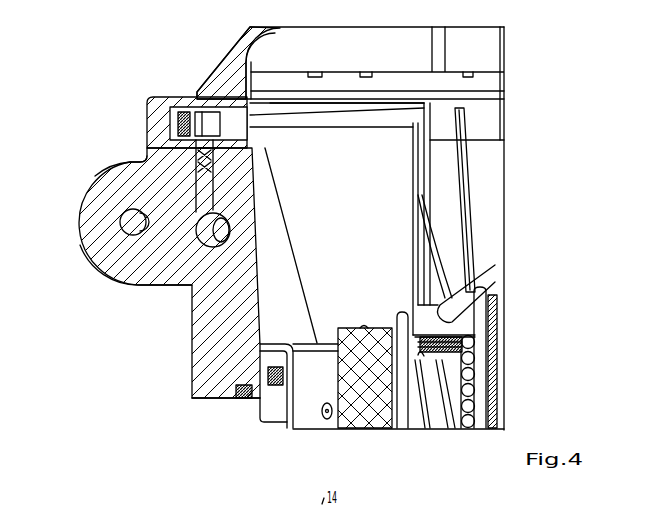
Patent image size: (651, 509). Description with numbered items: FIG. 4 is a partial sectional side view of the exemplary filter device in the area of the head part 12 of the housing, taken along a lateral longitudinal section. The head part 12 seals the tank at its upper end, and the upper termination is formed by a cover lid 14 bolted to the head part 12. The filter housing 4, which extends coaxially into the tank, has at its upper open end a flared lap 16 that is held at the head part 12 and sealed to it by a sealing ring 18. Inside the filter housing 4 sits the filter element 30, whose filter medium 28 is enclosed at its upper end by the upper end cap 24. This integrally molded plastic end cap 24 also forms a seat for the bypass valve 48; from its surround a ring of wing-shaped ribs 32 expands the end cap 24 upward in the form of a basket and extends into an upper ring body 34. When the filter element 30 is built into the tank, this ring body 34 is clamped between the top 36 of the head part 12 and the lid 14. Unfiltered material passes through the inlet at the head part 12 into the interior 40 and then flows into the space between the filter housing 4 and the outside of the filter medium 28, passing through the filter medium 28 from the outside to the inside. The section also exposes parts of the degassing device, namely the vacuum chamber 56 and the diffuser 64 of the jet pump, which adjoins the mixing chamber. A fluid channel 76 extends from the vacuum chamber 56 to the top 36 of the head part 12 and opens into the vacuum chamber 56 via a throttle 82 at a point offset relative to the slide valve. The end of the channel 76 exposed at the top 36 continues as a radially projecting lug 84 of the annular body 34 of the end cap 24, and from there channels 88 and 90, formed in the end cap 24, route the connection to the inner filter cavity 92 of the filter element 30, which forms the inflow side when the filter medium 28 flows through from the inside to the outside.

The filter housing 4 is at (286, 400).
The head part 12 is at (210, 338).
The cover lid 14 is at (240, 52).
The flared lap 16 is at (262, 357).
The sealing ring 18 is at (268, 370).
The upper end cap 24 is at (375, 331).
The filter medium 28 is at (479, 397).
The filter element 30 is at (340, 398).
The wing-shaped ribs 32 is at (200, 262).
The upper ring body 34 is at (190, 110).
The top of the head part 36 is at (115, 163).
The interior 40 is at (448, 215).
The bypass valve 48 is at (465, 322).
The vacuum chamber 56 is at (102, 263).
The diffuser 64 is at (120, 220).
The fluid channel 76 is at (212, 208).
The throttle 82 is at (205, 158).
The radially projecting lug 84 is at (172, 127).
The channel 88 is at (363, 117).
The channel 90 is at (418, 203).
The inner filter cavity 92 is at (408, 410).